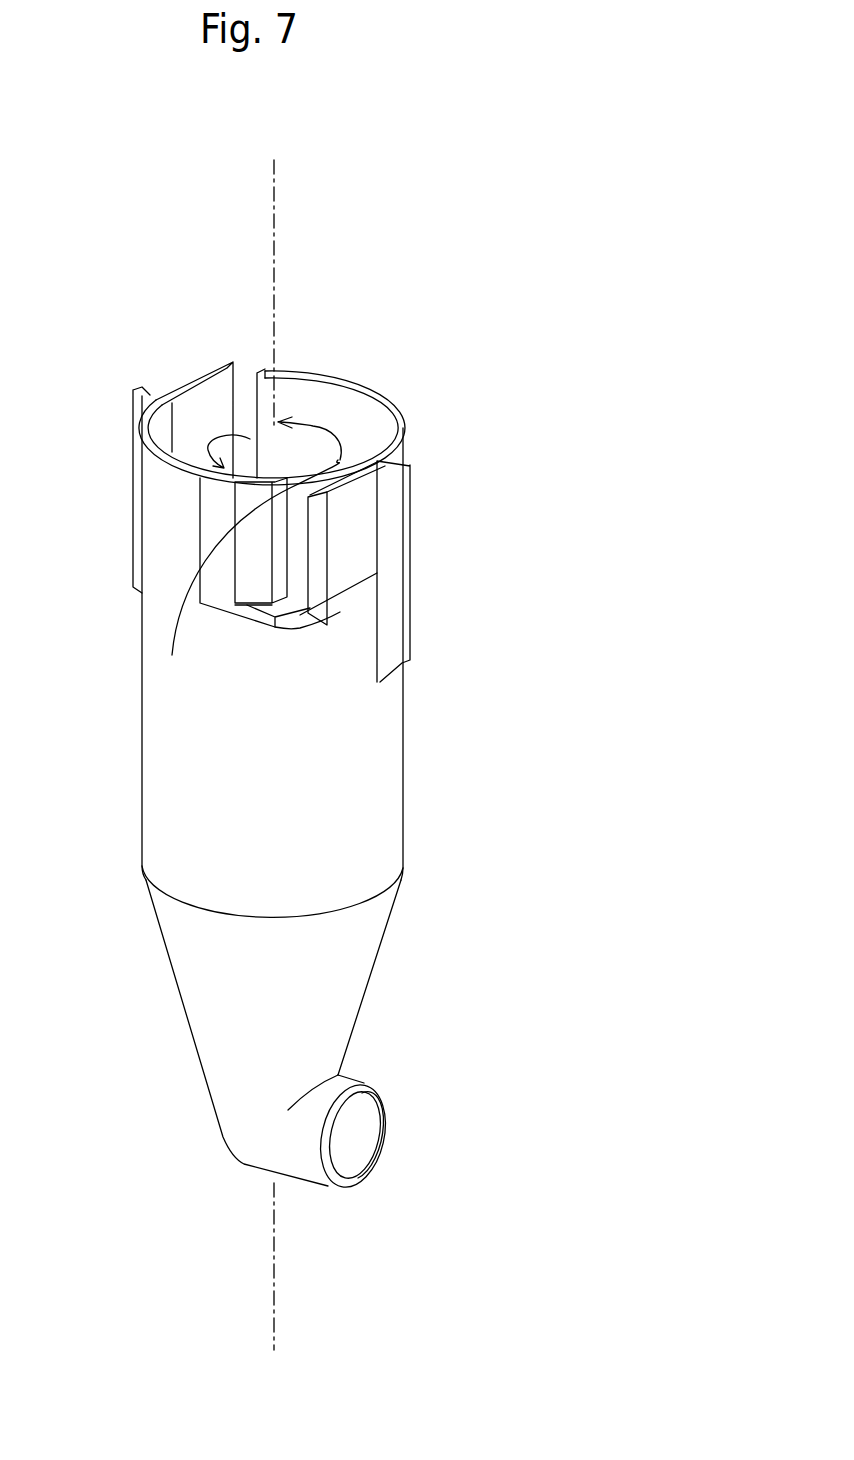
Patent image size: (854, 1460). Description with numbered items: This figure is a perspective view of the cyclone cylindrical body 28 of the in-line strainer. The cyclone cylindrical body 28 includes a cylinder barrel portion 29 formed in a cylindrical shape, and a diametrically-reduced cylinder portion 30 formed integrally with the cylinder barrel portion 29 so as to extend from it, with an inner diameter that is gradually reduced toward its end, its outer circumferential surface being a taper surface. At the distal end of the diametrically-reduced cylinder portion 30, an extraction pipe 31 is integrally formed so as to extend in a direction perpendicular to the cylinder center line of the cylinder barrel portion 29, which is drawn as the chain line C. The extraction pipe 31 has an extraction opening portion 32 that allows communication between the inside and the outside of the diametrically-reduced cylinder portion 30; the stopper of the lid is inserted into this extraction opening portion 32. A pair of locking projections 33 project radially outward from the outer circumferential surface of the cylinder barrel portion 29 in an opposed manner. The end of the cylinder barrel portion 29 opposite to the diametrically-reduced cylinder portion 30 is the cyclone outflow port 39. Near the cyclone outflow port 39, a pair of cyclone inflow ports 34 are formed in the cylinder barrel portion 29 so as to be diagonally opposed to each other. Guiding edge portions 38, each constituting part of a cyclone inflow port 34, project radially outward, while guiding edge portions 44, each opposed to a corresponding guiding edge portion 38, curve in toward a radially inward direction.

The cyclone cylindrical body 28 is at (443, 367).
The cylinder barrel portion 29 is at (405, 800).
The diametrically-reduced cylinder portion 30 is at (365, 998).
The extraction pipe 31 is at (310, 1183).
The extraction opening portion 32 is at (357, 1142).
The locking projections 33 is at (133, 417).
The cyclone inflow ports 34 is at (245, 378).
The guiding edge portions 38 is at (232, 361).
The cyclone outflow port 39 is at (333, 390).
The guiding edge portions 44 is at (258, 371).
The chain line C is at (272, 1275).